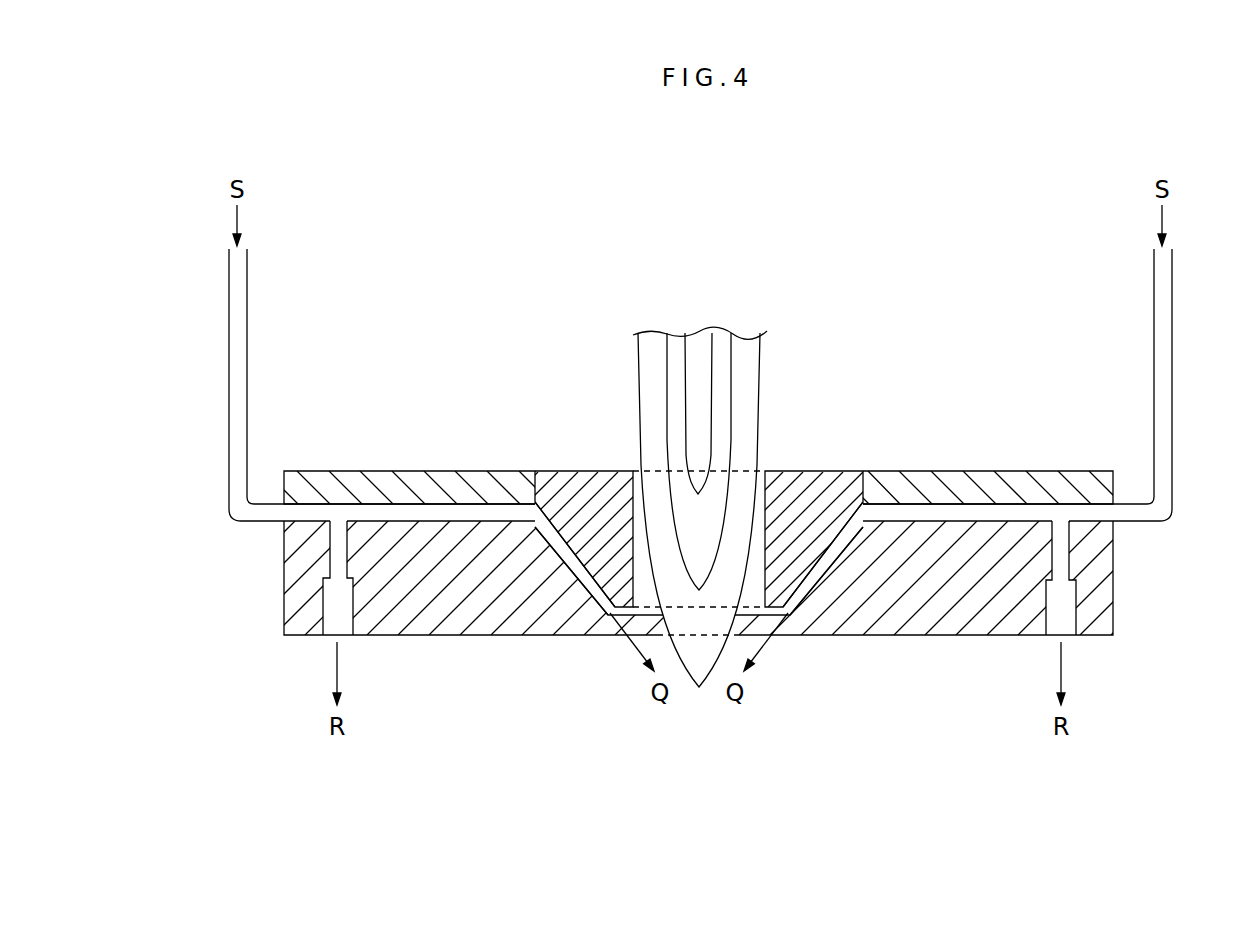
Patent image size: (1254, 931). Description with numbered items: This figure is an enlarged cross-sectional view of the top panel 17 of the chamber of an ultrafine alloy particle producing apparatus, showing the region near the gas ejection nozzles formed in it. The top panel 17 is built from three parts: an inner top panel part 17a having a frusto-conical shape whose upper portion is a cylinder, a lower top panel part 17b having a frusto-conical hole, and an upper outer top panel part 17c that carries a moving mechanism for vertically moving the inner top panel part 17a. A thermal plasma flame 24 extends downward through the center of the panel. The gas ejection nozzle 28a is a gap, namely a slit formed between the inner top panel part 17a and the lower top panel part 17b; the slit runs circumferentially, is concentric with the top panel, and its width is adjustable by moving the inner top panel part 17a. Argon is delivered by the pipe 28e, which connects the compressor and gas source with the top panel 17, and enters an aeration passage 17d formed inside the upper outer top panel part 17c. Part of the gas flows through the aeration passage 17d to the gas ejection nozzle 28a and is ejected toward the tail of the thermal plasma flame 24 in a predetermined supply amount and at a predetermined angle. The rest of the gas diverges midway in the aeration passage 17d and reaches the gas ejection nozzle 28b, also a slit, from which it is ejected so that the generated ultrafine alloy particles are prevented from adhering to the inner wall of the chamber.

The top panel 17 is at (932, 388).
The inner top panel part 17a is at (575, 478).
The lower top panel part 17b is at (297, 585).
The upper outer top panel part 17c is at (360, 475).
The aeration passage 17d is at (433, 500).
The thermal plasma flame 24 is at (688, 385).
The gas ejection nozzle 28a is at (578, 573).
The gas ejection nozzle 28b is at (323, 606).
The pipe 28e is at (247, 362).